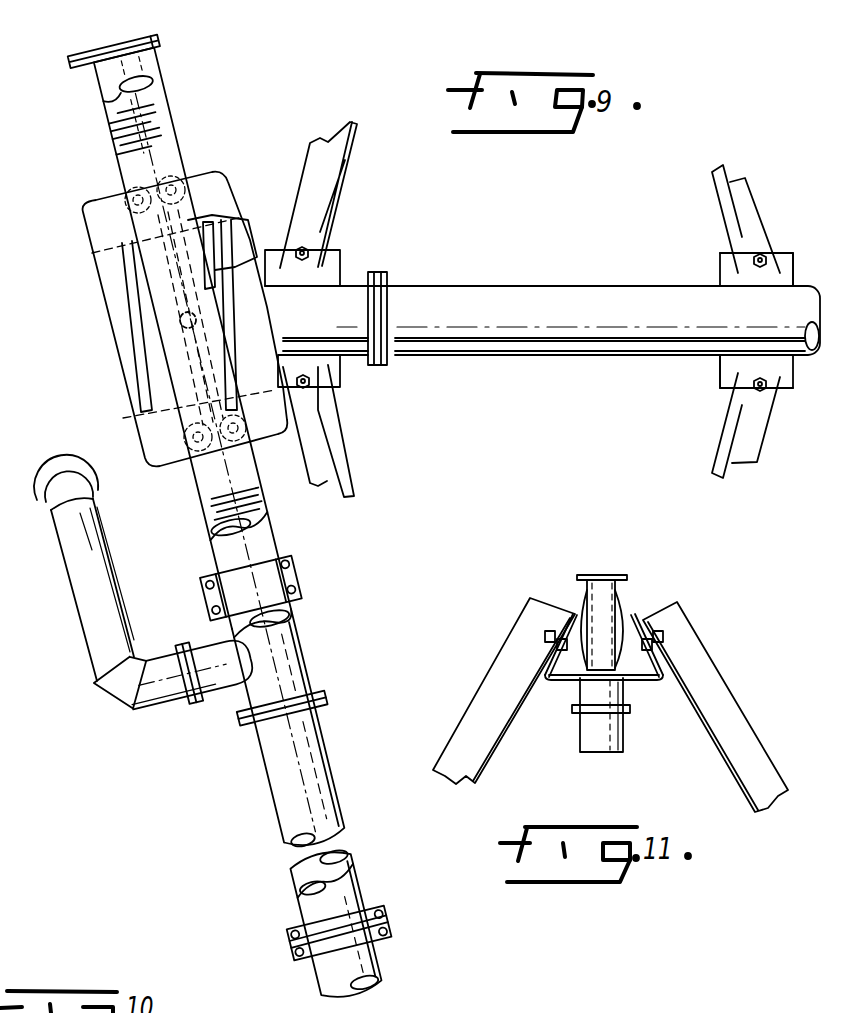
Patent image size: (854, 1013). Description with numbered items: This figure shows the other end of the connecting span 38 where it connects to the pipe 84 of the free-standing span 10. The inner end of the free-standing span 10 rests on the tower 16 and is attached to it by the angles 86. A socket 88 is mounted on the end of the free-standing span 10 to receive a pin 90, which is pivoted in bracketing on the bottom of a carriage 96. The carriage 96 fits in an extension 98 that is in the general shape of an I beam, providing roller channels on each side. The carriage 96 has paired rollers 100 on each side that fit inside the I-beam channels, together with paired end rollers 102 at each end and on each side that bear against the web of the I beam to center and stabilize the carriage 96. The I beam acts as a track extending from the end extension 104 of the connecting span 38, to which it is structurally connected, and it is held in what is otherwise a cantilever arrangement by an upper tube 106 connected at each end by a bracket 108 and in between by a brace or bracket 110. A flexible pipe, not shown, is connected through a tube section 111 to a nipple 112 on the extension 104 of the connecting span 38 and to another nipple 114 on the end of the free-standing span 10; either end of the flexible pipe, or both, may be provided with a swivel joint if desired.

In FIG. 9, the free-standing span 10 is at (542, 317).
In FIG. 9, the tower 16 is at (747, 175).
In FIG. 11, the tower 16 is at (769, 751).
In FIG. 9, the connecting span 38 is at (307, 868).
In FIG. 9, the pipe 84 is at (578, 347).
In FIG. 9, the angles 86 is at (348, 173).
In FIG. 11, the angles 86 is at (500, 667).
In FIG. 11, the socket 88 is at (610, 602).
In FIG. 9, the pin 90 is at (125, 340).
In FIG. 9, the carriage 96 is at (175, 318).
In FIG. 9, the extension 98 is at (163, 128).
In FIG. 9, the paired rollers 100 is at (204, 211).
In FIG. 9, the paired end rollers 102 is at (205, 187).
In FIG. 9, the end extension 104 is at (305, 680).
In FIG. 9, the upper tube 106 is at (147, 62).
In FIG. 9, the bracket 108 is at (98, 47).
In FIG. 9, the brace or bracket 110 is at (300, 580).
In FIG. 9, the tube section 111 is at (80, 575).
In FIG. 9, the nipple 112 is at (228, 688).
In FIG. 11, the nipple 114 is at (603, 753).